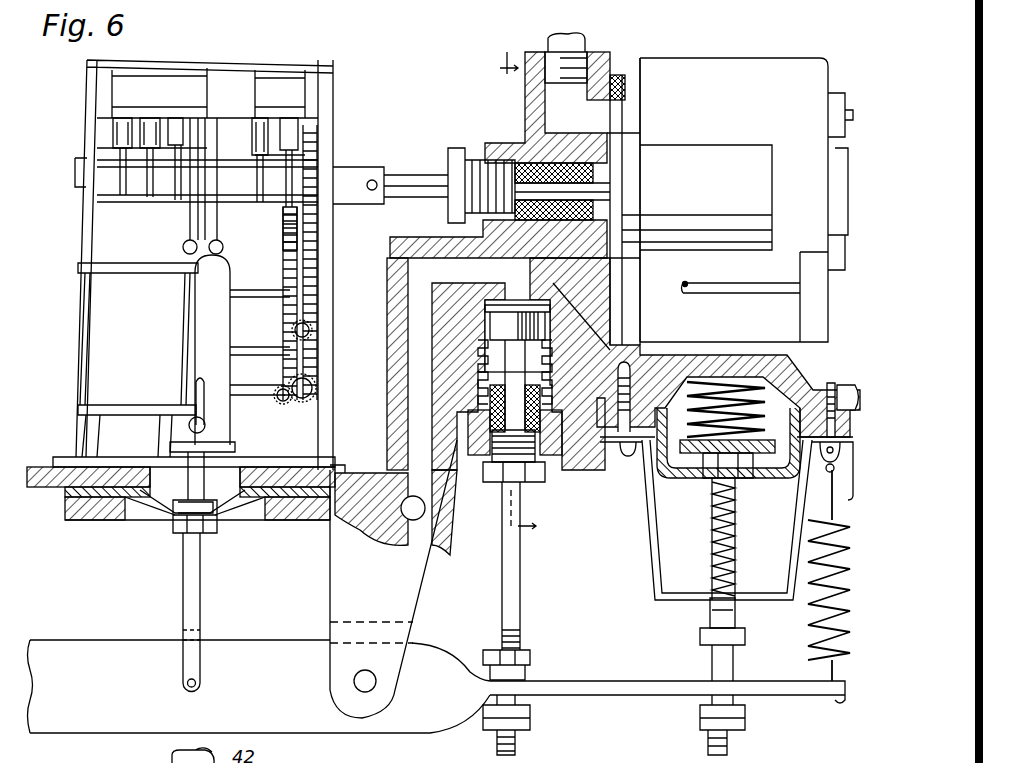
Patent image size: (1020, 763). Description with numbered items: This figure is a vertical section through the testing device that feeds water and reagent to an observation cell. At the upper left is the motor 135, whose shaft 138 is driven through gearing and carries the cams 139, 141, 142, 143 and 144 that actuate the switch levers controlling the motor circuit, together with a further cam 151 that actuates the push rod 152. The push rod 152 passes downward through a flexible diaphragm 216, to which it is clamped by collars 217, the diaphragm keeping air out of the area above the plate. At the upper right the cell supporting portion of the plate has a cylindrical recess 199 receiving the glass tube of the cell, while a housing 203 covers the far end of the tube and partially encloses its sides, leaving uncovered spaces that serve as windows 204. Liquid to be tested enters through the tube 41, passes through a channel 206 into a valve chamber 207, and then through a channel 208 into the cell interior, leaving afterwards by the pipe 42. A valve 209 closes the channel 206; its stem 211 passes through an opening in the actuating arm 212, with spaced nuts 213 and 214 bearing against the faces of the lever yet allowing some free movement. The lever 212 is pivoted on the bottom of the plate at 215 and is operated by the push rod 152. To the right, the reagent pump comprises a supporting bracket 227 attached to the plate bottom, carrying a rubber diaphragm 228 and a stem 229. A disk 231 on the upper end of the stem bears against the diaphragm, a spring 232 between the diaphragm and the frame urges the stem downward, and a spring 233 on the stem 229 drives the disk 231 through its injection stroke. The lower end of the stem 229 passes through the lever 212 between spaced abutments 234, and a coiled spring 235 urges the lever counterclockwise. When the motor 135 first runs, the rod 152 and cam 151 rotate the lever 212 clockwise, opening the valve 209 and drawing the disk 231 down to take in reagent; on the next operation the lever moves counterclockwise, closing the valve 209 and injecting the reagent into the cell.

The tube 41 is at (420, 528).
The pipe 42 is at (553, 43).
The motor 135 is at (194, 280).
The shaft 138 is at (347, 176).
The cam 139 is at (298, 188).
The cam 141 is at (262, 170).
The cam 142 is at (178, 202).
The cam 143 is at (150, 198).
The cam 144 is at (120, 182).
The cam 151 is at (207, 212).
The push rod 152 is at (192, 573).
The cylindrical recess 199 is at (628, 60).
The housing 203 is at (746, 200).
The windows 204 is at (697, 197).
The channel 206 is at (422, 305).
The valve chamber 207 is at (500, 355).
The channel 208 is at (612, 300).
The valve 209 is at (500, 328).
The stem 211 is at (512, 552).
The actuating arm 212 is at (566, 686).
The nut 213 is at (530, 658).
The nut 214 is at (531, 730).
The pivot 215 is at (352, 681).
The flexible diaphragm 216 is at (223, 520).
The collars 217 is at (170, 520).
The supporting bracket 227 is at (652, 498).
The rubber diaphragm 228 is at (676, 482).
The stem 229 is at (716, 614).
The disk 231 is at (745, 476).
The spring 232 is at (787, 380).
The spring 233 is at (735, 554).
The spaced abutments 234 is at (742, 642).
The coiled spring 235 is at (803, 640).